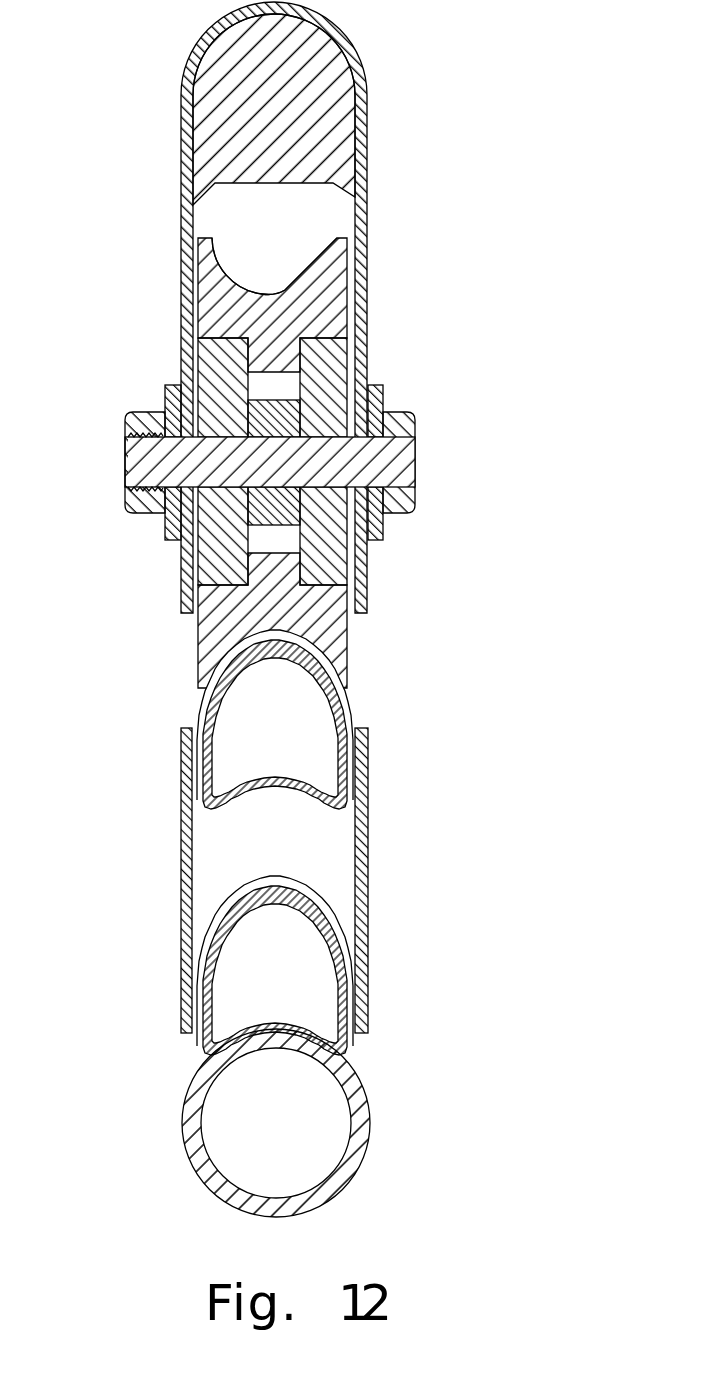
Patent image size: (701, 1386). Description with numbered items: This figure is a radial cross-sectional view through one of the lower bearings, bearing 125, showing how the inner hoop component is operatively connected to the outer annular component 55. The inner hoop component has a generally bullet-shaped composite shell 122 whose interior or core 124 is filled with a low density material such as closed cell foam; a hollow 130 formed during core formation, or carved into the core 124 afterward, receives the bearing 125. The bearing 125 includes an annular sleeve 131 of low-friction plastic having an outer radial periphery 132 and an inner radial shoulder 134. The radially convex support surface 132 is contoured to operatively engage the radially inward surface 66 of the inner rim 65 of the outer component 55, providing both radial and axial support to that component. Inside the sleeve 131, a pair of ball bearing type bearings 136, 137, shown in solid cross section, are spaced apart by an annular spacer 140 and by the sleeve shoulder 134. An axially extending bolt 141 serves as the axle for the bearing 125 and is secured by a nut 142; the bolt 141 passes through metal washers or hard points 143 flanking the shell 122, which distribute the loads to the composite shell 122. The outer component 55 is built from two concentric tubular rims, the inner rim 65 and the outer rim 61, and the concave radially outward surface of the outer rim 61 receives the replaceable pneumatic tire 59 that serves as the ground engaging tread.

The outer annular component 55 is at (405, 893).
The pneumatic tire 59 is at (195, 1143).
The outer rim 61 is at (220, 896).
The inner rim 65 is at (237, 813).
The radially inward surface 66 is at (277, 661).
The shell 122 is at (183, 155).
The core 124 is at (222, 112).
The bearing 125 is at (171, 642).
The hollow 130 is at (320, 201).
The annular sleeve 131 is at (318, 300).
The outer radial periphery 132 is at (283, 290).
The inner radial shoulder 134 is at (223, 305).
The ball bearing 136 is at (223, 357).
The ball bearing 137 is at (333, 358).
The annular spacer 140 is at (280, 398).
The bolt 141 is at (416, 466).
The nut 142 is at (130, 500).
The washers 143 is at (168, 540).